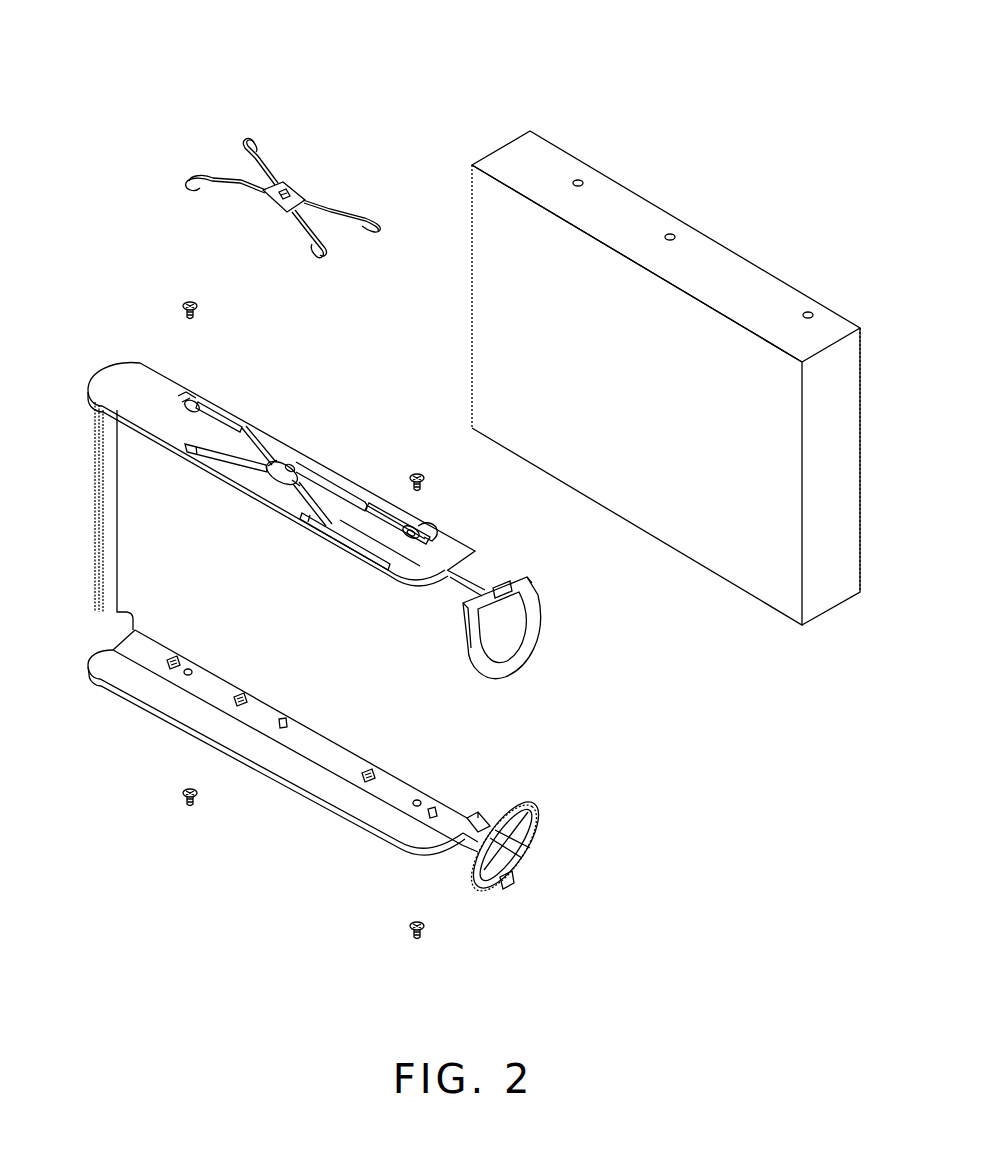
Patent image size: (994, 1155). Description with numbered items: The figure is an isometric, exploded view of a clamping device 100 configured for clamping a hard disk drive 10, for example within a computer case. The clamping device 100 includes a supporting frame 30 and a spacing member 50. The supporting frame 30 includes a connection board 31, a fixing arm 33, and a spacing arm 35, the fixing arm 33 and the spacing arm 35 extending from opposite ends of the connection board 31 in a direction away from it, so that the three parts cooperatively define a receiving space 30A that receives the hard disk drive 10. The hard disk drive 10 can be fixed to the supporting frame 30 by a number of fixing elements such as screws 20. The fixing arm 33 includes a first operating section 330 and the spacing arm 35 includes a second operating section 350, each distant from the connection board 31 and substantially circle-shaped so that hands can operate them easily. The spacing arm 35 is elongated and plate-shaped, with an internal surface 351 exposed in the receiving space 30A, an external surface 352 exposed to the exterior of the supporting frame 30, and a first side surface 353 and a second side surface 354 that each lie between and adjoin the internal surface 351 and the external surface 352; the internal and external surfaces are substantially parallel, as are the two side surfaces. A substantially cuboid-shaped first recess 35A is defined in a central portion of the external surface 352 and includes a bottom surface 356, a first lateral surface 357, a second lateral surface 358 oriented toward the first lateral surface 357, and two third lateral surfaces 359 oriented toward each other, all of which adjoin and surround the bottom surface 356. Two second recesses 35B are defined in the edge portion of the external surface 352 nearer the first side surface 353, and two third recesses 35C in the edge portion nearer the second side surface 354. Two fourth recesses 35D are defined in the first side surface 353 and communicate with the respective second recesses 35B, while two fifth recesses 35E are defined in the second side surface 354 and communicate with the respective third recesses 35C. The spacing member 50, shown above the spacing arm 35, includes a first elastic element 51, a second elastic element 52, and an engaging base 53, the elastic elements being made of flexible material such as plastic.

The clamping device 100 is at (403, 52).
The hard disk drive 10 is at (513, 323).
The screws 20 is at (183, 802).
The supporting frame 30 is at (60, 244).
The fixing arm 33 is at (120, 670).
The connection board 31 is at (113, 462).
The spacing arm 35 is at (152, 383).
The first recess 35A is at (276, 463).
The second recesses 35B is at (213, 450).
The third recesses 35C is at (226, 457).
The fourth recesses 35D is at (305, 517).
The fifth recesses 35E is at (368, 485).
The internal surface 351 is at (334, 544).
The external surface 352 is at (385, 550).
The first side surface 353 is at (235, 467).
The second side surface 354 is at (425, 520).
The bottom surface 356 is at (283, 458).
The first lateral surface 357 is at (265, 482).
The second lateral surface 358 is at (297, 474).
The third lateral surfaces 359 is at (298, 465).
The second operating section 350 is at (528, 670).
The first operating section 330 is at (520, 805).
The receiving space 30A is at (395, 680).
The spacing member 50 is at (195, 283).
The first elastic element 51 is at (310, 227).
The second elastic element 52 is at (217, 185).
The engaging base 53 is at (267, 198).